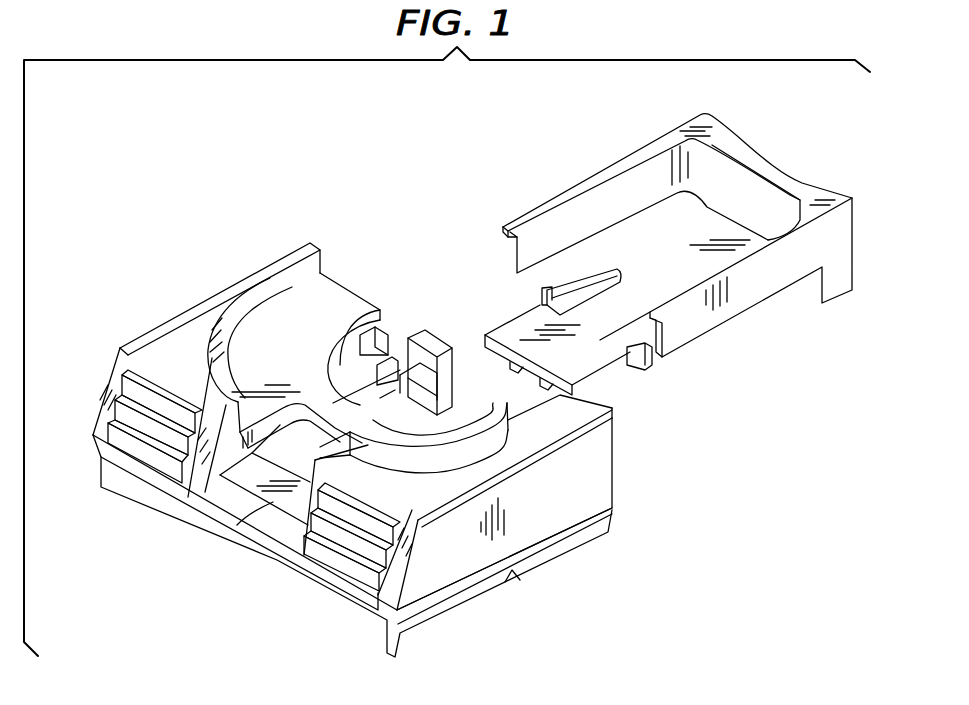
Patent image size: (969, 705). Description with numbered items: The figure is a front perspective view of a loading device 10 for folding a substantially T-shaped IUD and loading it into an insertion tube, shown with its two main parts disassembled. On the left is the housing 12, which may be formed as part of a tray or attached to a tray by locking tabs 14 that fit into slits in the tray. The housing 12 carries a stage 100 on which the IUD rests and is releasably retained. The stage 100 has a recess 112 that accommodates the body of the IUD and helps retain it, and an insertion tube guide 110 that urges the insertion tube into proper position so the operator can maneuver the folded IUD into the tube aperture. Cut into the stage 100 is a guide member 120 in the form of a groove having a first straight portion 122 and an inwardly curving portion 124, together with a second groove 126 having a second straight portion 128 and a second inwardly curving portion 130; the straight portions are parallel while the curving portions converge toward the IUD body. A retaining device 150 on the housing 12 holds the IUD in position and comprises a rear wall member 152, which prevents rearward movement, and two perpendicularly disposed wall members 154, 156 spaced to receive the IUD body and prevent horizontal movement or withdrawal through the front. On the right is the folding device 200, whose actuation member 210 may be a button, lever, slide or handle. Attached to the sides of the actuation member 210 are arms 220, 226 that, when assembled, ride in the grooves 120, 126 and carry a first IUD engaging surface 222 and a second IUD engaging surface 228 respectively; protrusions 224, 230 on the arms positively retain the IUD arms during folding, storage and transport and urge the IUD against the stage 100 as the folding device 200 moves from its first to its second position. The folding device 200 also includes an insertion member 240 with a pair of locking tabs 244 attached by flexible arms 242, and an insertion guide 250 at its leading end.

The loading device 10 is at (535, 590).
The housing 12 is at (560, 537).
The locking tabs 14 is at (460, 608).
The stage 100 is at (342, 298).
The insertion tube guide 110 is at (240, 533).
The recess 112 is at (333, 433).
The guide member 120 is at (377, 313).
The first straight portion 122 is at (353, 335).
The second inwardly curving portion 124 is at (323, 370).
The second groove 126 is at (533, 430).
The second straight portion 128 is at (487, 423).
The second inwardly curving portion 130 is at (438, 453).
The retaining device 150 is at (447, 333).
The rear wall member 152 is at (433, 365).
The wall member 154 is at (413, 393).
The wall member 156 is at (357, 363).
The folding device 200 is at (795, 172).
The actuation member 210 is at (807, 183).
The arm 220 is at (585, 182).
The first IUD engaging surface 222 is at (511, 256).
The protrusion 224 is at (510, 222).
The arm 226 is at (748, 305).
The second IUD engaging surface 228 is at (658, 357).
The protrusion 230 is at (665, 317).
The insertion member 240 is at (728, 228).
The flexible arms 242 is at (598, 268).
The locking tabs 244 is at (550, 288).
The insertion guide 250 is at (577, 365).